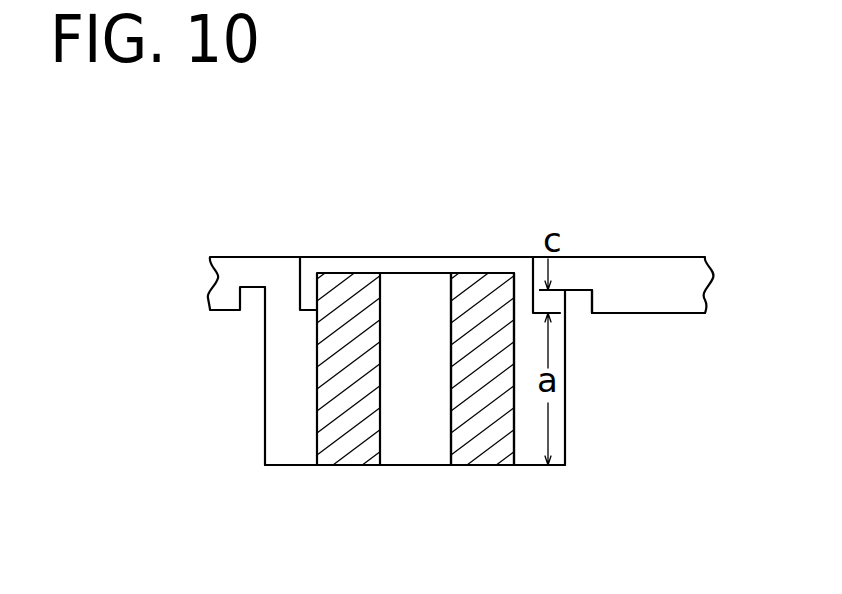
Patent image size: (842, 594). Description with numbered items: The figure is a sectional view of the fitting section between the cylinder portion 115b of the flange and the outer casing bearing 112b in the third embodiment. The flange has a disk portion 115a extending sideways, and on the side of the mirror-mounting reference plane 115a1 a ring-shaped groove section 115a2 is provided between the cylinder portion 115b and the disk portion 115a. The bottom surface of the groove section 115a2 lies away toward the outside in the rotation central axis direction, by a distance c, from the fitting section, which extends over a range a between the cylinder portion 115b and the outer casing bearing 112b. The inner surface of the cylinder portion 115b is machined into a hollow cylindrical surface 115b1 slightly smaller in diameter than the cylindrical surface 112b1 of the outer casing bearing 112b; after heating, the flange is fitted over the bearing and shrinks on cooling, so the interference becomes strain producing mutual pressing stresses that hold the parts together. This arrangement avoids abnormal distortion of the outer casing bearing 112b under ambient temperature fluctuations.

The disk portion 115a is at (615, 275).
The mirror-mounting reference plane 115a1 is at (666, 314).
The ring-shaped groove section 115a2 is at (580, 305).
The cylinder portion 115b is at (281, 441).
The hollow cylindrical surface 115b1 is at (517, 447).
The outer casing bearing 112b is at (340, 452).
The cylindrical surface 112b1 is at (493, 443).